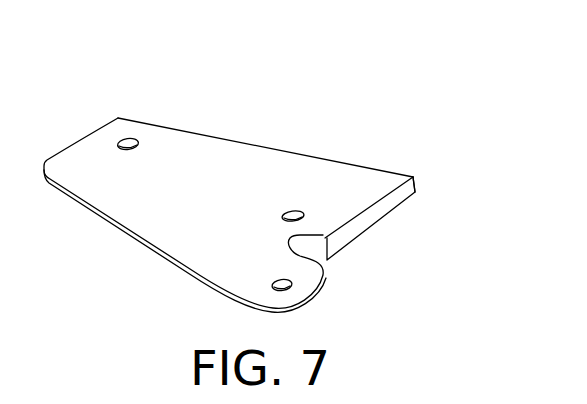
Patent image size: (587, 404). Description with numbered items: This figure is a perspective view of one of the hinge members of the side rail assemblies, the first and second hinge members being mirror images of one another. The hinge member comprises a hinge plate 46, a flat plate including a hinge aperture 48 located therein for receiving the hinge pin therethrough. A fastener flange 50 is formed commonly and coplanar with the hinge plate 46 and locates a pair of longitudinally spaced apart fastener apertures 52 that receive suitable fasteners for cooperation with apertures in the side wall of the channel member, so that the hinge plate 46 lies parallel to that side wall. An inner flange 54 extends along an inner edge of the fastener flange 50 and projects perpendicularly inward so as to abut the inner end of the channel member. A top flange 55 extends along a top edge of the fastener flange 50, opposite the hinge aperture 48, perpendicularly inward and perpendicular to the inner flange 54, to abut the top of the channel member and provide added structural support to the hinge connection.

The hinge plate 46 is at (217, 255).
The hinge aperture 48 is at (296, 286).
The fastener flange 50 is at (247, 157).
The fastener apertures 52 is at (140, 141).
The inner flange 54 is at (366, 228).
The top flange 55 is at (398, 172).